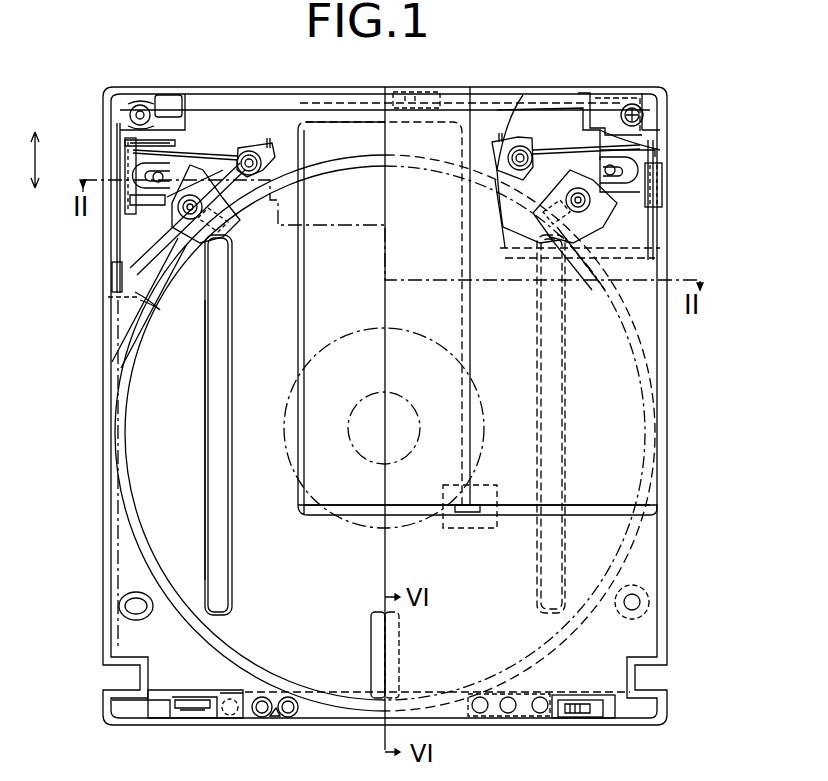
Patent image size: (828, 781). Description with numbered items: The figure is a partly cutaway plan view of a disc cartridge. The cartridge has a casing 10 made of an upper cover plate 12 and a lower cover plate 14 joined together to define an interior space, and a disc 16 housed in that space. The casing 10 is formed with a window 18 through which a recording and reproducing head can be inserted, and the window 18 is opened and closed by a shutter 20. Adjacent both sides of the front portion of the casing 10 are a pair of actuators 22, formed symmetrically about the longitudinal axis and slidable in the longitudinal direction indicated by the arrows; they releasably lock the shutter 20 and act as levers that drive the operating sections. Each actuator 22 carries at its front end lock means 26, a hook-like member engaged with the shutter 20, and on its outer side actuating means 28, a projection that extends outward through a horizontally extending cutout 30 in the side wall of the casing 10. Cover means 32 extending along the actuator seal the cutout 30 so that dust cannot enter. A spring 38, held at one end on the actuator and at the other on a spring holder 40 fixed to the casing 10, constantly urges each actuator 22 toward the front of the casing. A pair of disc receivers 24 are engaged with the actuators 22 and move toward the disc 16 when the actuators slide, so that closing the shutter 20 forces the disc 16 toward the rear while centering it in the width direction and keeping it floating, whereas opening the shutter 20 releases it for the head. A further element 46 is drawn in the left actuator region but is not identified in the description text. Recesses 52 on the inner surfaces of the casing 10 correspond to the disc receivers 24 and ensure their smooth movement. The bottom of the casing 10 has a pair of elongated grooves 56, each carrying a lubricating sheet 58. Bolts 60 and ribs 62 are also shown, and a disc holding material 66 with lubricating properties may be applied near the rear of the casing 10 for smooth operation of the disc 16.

The casing 10 is at (675, 82).
The upper cover plate 12 is at (665, 567).
The lower cover plate 14 is at (123, 640).
The disc 16 is at (120, 480).
The window 18 is at (416, 105).
The shutter 20 is at (460, 335).
The actuators 22 is at (133, 162).
The disc receivers 24 is at (238, 217).
The lock means 26 is at (181, 92).
The actuating means 28 is at (125, 165).
The cutout 30 is at (110, 240).
The cover means 32 is at (112, 272).
The spring 38 is at (235, 150).
The spring holder 40 is at (523, 95).
The lever arm 46 is at (168, 217).
The recesses 52 is at (233, 242).
The elongated grooves 56 is at (205, 452).
The sheet 58 is at (205, 415).
The bolts 60 is at (630, 103).
The ribs 62 is at (140, 298).
The disc holding material 66 is at (370, 650).